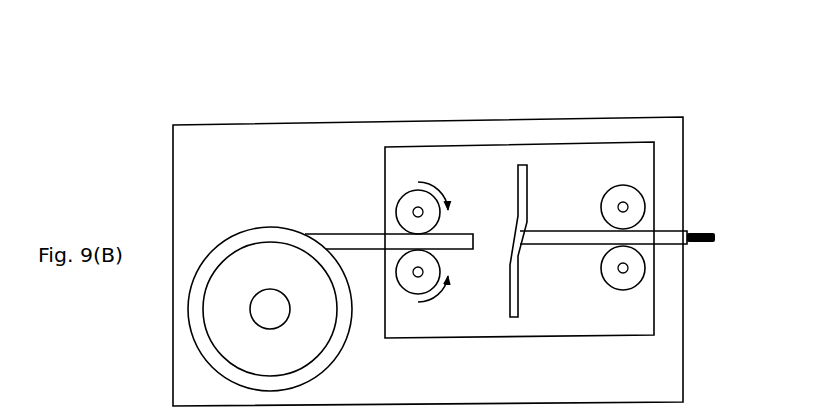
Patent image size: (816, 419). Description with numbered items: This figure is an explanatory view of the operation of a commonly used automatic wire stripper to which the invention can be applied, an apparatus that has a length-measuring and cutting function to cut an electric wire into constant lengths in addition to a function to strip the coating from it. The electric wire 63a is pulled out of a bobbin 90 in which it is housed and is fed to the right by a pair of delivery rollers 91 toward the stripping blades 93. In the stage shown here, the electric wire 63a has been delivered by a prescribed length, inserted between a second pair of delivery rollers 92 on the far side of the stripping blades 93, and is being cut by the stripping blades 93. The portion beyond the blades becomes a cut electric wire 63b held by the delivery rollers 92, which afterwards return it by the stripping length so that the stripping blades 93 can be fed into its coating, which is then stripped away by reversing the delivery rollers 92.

The bobbin 90 is at (253, 226).
The electric wire 63a is at (340, 231).
The delivery rollers 91 is at (406, 190).
The stripping blades 93 is at (511, 191).
The cut electric wire 63b is at (575, 229).
The delivery rollers 92 is at (634, 183).